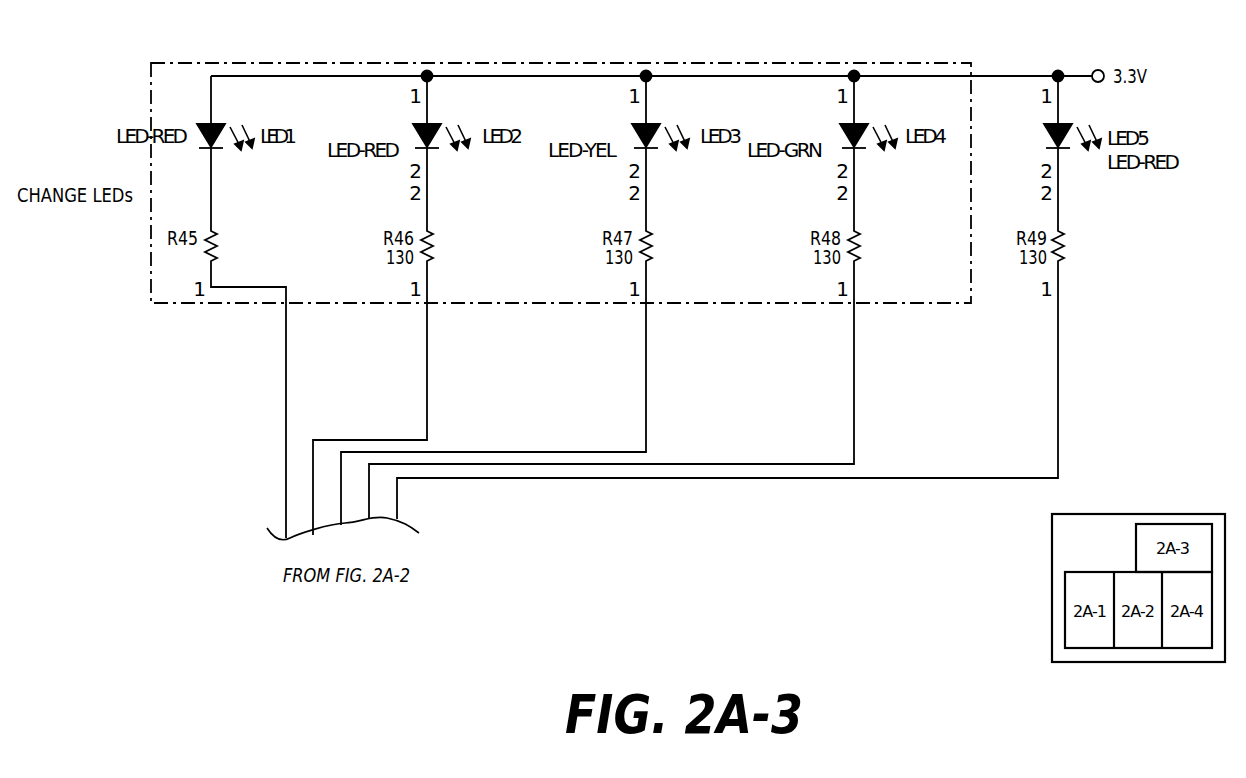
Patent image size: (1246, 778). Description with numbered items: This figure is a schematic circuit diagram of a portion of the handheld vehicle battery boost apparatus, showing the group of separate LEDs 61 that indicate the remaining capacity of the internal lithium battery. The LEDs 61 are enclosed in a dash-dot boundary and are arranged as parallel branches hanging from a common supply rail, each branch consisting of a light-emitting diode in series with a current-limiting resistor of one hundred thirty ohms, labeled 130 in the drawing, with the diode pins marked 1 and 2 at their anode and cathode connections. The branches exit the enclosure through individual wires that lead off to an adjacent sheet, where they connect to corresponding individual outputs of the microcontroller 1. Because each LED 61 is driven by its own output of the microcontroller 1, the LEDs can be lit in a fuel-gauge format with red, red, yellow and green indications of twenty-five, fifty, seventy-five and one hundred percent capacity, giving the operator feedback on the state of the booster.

The separate LEDs 61 is at (151, 100).
The microcontroller 1 is at (202, 100).
The LED pin 2 (cathode) 2 is at (202, 188).
The resistor R45 value 130 ohm 130 is at (193, 248).